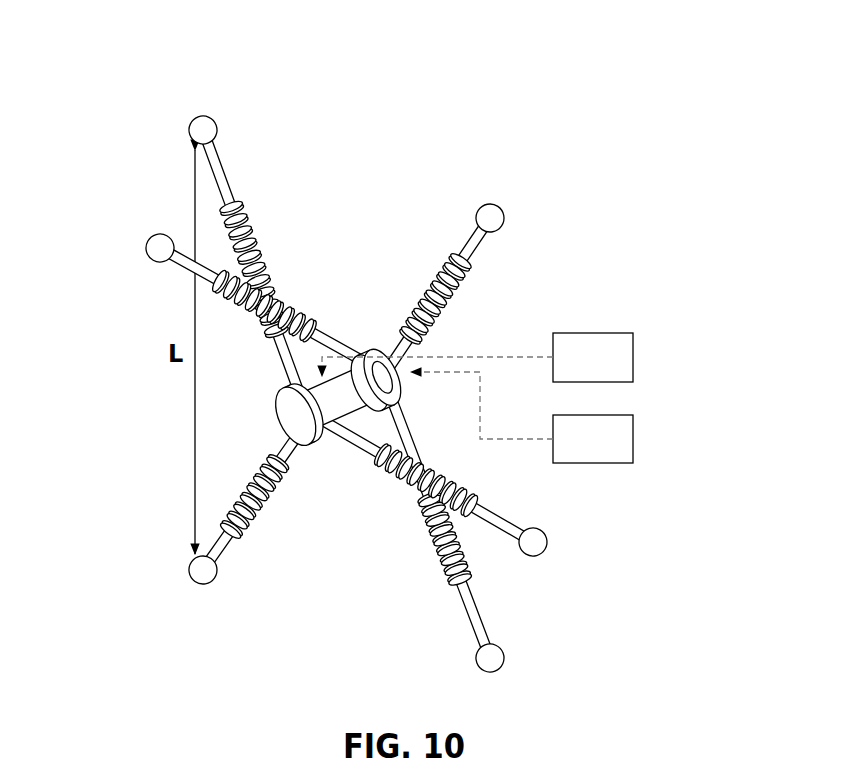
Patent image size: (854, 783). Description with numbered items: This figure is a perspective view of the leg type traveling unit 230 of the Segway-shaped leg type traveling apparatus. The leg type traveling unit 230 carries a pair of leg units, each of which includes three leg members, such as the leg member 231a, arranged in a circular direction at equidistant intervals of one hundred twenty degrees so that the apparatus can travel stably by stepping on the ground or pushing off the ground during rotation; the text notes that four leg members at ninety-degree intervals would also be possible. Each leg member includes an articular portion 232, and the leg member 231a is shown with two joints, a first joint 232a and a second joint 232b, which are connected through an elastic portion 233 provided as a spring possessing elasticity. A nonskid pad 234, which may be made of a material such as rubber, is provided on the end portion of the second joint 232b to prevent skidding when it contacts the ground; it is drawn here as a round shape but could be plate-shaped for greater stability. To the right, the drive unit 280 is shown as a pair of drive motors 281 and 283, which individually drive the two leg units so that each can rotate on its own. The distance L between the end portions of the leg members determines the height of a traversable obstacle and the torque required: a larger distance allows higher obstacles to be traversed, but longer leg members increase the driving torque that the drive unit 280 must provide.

The leg type traveling unit 230 is at (428, 39).
The leg member 231a is at (245, 510).
The articular portion 232 is at (90, 450).
The first joint 232a is at (291, 444).
The second joint 232b is at (220, 546).
The elastic portion 233 is at (254, 496).
The nonskid pad 234 is at (202, 569).
The drive unit 280 is at (553, 398).
The drive motor 281 is at (633, 354).
The drive motor 283 is at (564, 417).